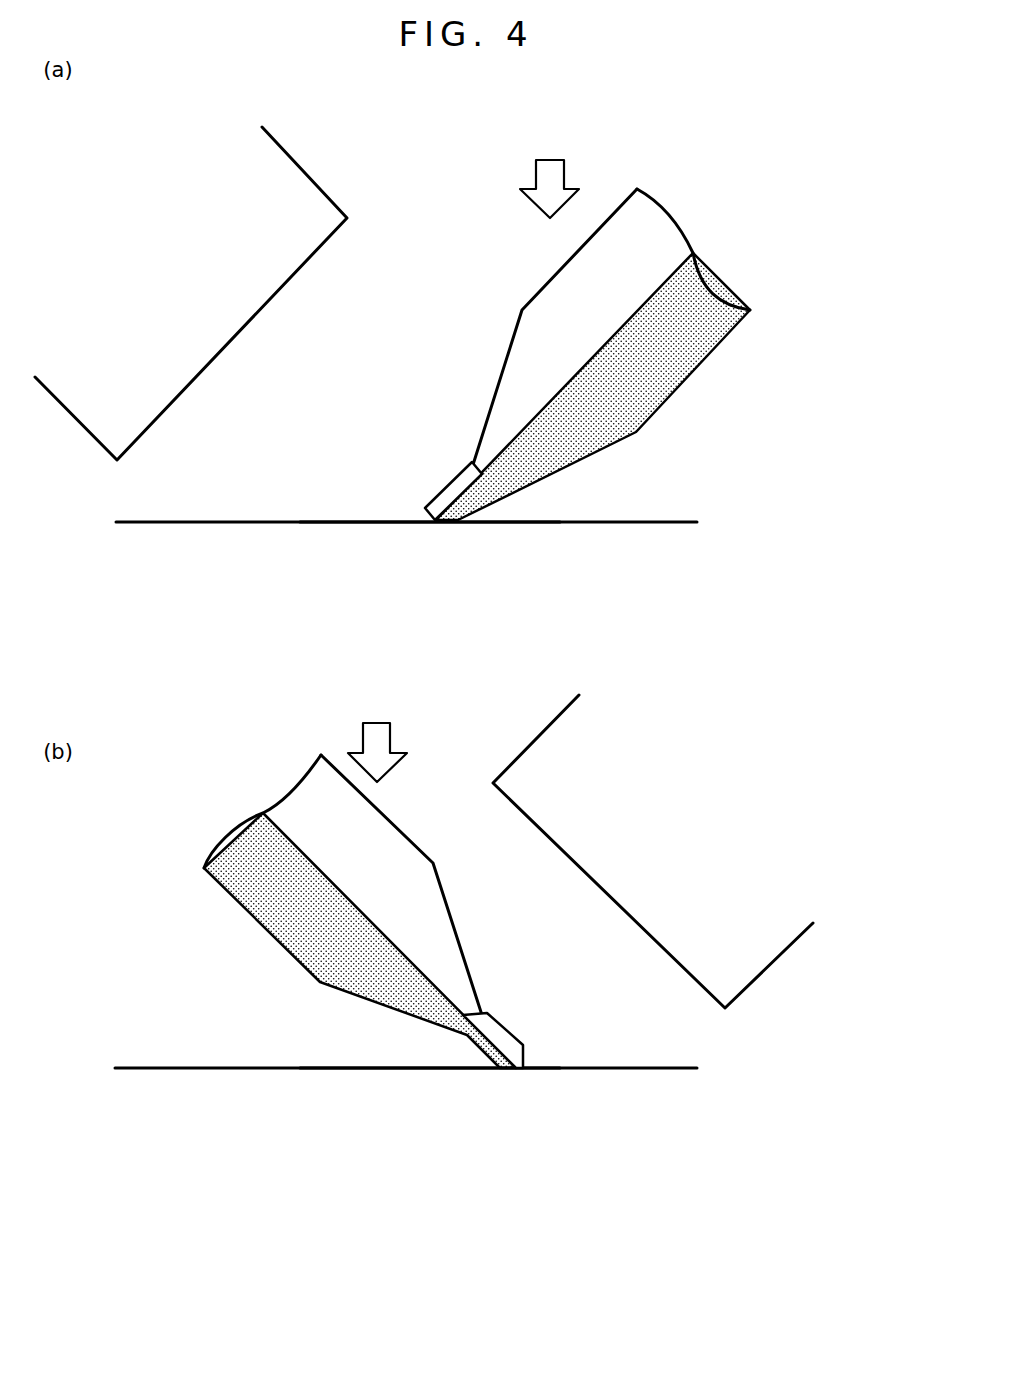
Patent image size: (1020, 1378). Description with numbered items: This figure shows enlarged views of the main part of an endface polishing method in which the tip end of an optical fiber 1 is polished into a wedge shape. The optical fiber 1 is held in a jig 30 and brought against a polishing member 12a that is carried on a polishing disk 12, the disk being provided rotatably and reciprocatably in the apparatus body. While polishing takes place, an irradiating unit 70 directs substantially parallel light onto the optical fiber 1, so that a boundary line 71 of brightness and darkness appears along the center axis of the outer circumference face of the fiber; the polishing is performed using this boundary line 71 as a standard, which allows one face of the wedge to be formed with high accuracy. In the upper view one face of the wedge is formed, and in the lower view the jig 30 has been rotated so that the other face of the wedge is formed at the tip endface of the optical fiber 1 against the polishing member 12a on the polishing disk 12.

The optical fiber 1 is at (423, 508).
The polishing disk 12 is at (593, 540).
The polishing member 12a is at (612, 522).
The jig 30 is at (647, 252).
The irradiating unit 70 is at (291, 218).
The boundary line 71 is at (447, 503).